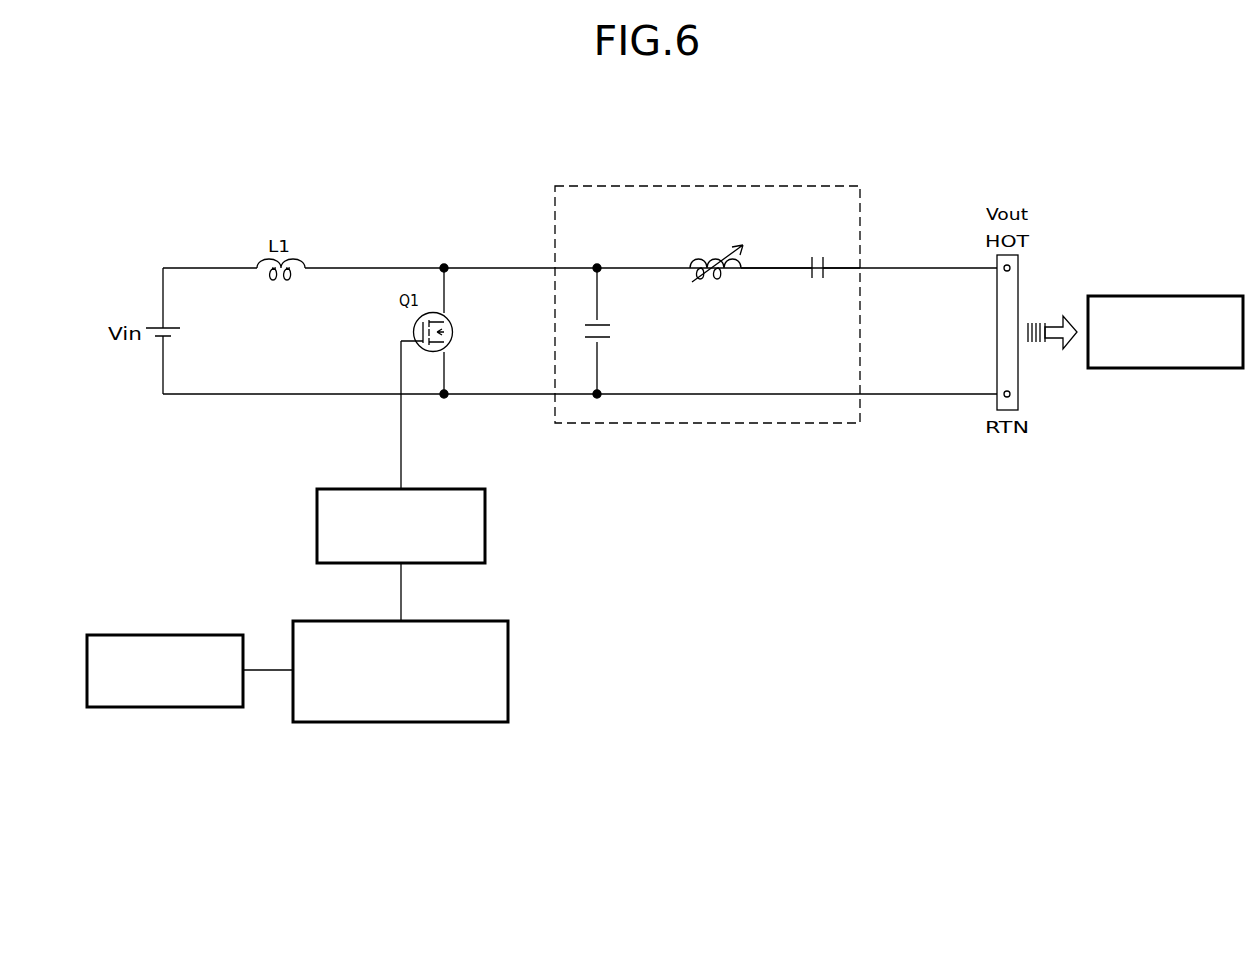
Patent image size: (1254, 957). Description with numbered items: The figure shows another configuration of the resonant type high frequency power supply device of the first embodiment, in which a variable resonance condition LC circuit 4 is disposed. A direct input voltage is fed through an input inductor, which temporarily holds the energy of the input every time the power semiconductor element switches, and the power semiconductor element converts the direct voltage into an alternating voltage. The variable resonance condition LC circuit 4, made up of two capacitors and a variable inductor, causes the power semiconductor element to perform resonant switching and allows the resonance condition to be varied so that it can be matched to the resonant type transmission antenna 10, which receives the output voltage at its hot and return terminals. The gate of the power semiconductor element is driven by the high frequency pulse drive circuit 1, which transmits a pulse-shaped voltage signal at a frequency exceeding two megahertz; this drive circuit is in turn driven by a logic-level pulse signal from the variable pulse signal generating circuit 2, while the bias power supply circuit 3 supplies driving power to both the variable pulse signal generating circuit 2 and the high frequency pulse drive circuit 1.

The high frequency pulse drive circuit 1 is at (438, 489).
The variable pulse signal generating circuit 2 is at (466, 621).
The bias power supply circuit 3 is at (201, 635).
The variable resonance condition LC circuit 4 is at (823, 188).
The resonant type transmission antenna 10 is at (1201, 296).